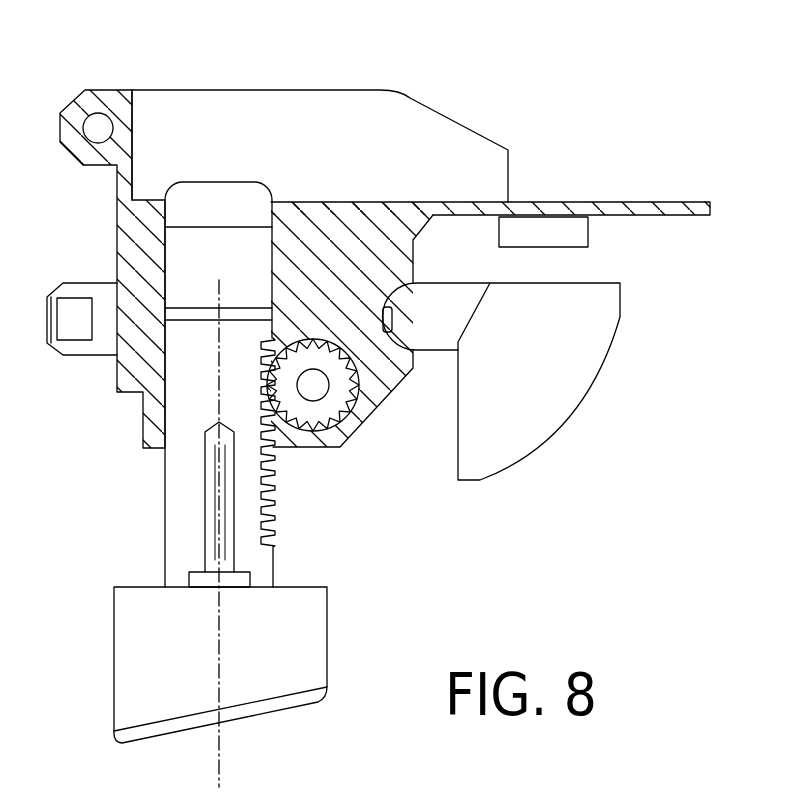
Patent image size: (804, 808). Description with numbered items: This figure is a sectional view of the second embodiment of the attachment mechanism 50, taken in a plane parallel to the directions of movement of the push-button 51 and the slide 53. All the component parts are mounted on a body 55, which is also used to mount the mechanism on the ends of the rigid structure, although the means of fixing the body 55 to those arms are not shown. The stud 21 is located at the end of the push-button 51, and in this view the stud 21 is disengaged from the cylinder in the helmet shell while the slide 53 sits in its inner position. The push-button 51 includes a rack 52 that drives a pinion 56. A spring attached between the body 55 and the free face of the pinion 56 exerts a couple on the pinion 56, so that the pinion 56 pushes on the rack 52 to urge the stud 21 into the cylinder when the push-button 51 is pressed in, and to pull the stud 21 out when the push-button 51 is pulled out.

The attachment mechanism 50 is at (360, 70).
The stud 21 is at (232, 200).
The body 55 is at (477, 158).
The slide 53 is at (578, 300).
The pinion 56 is at (370, 420).
The push-button 51 is at (187, 495).
The rack 52 is at (275, 495).